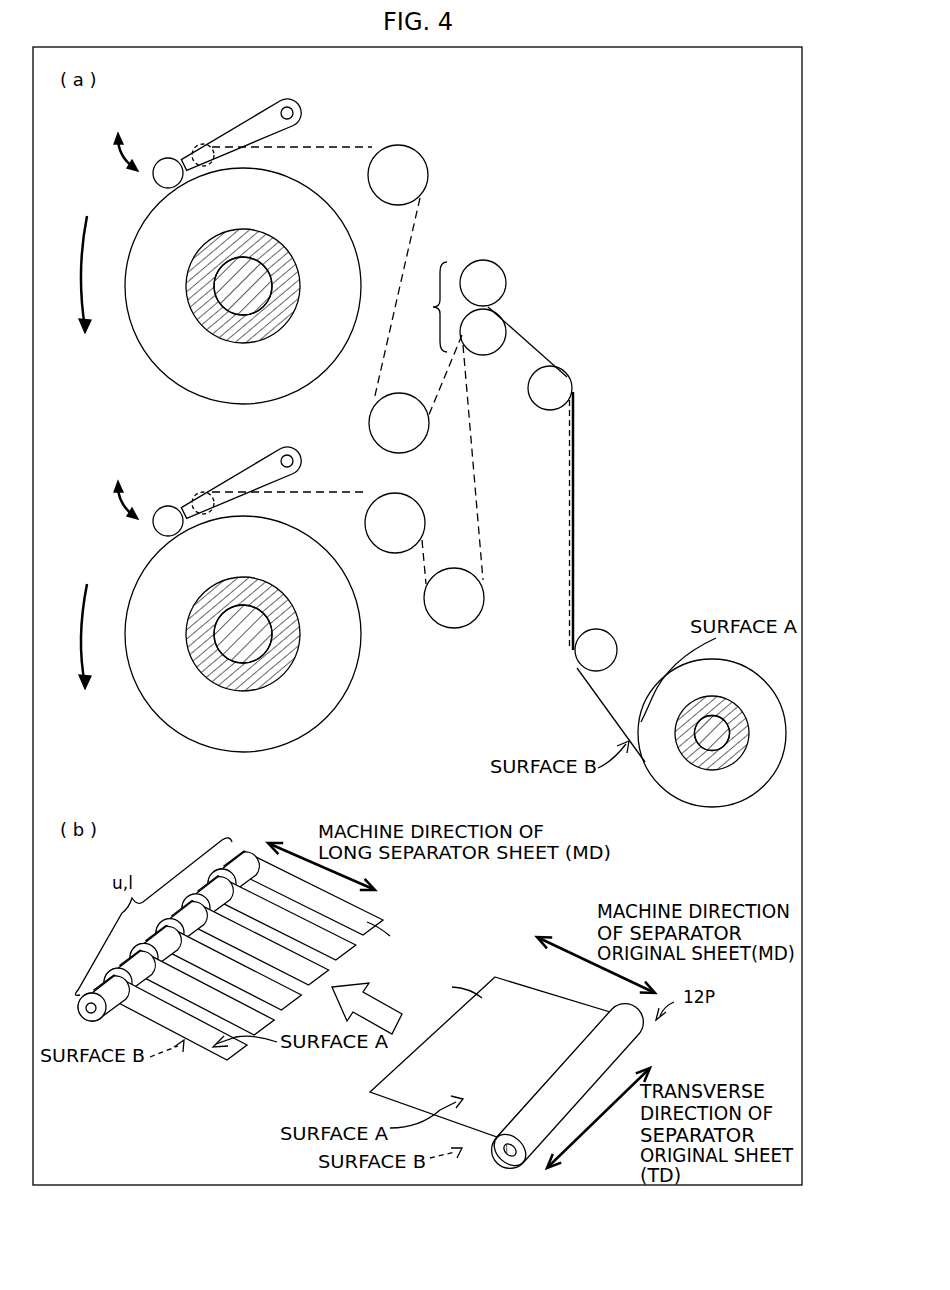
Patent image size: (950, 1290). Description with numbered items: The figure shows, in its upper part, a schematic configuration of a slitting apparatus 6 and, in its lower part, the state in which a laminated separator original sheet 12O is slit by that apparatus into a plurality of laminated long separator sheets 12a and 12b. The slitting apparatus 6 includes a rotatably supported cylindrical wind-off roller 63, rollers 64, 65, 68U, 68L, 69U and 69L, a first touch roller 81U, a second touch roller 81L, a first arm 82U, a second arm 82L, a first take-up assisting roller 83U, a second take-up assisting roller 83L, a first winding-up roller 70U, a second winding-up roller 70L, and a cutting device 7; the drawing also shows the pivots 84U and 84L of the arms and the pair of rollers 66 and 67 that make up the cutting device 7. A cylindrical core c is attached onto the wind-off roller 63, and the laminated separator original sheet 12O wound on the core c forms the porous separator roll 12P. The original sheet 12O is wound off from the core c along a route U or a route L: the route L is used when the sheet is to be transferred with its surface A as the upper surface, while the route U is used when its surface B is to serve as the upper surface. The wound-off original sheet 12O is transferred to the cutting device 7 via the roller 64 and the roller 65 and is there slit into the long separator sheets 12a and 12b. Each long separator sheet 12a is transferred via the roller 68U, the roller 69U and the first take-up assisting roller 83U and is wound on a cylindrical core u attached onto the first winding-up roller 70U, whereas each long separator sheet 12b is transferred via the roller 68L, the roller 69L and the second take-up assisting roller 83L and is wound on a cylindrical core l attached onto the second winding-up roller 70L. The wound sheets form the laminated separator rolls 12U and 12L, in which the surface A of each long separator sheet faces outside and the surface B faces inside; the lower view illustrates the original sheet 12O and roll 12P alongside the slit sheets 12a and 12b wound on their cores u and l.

The slitting apparatus 6 is at (590, 100).
The cutting device 7 is at (432, 307).
The laminated separator roll 12U is at (160, 224).
The laminated separator roll 12L is at (160, 572).
The laminated long separator sheet 12a is at (353, 137).
The laminated long separator sheet 12b is at (326, 489).
The laminated separator original sheet 12O is at (576, 494).
The porous separator roll 12P is at (768, 808).
The wind-off roller 63 is at (692, 746).
The roller 64 is at (605, 640).
The roller 65 is at (566, 380).
The lower slitting roller 66 is at (490, 352).
The upper slitting roller 67 is at (497, 287).
The roller 68U is at (410, 446).
The roller 68L is at (468, 617).
The roller 69U is at (415, 160).
The roller 69L is at (412, 510).
The first winding-up roller 70U is at (225, 298).
The second winding-up roller 70L is at (225, 646).
The first touch roller 81U is at (165, 162).
The second touch roller 81L is at (165, 510).
The first arm 82U is at (240, 130).
The second arm 82L is at (240, 478).
The first take-up assisting roller 83U is at (196, 146).
The second take-up assisting roller 83L is at (196, 494).
The upper pivot 84U is at (294, 106).
The lower pivot 84L is at (294, 454).
The cylindrical core u is at (190, 296).
The cylindrical core l is at (190, 644).
The cylindrical core c is at (704, 738).
The route U is at (690, 663).
The route L is at (650, 712).